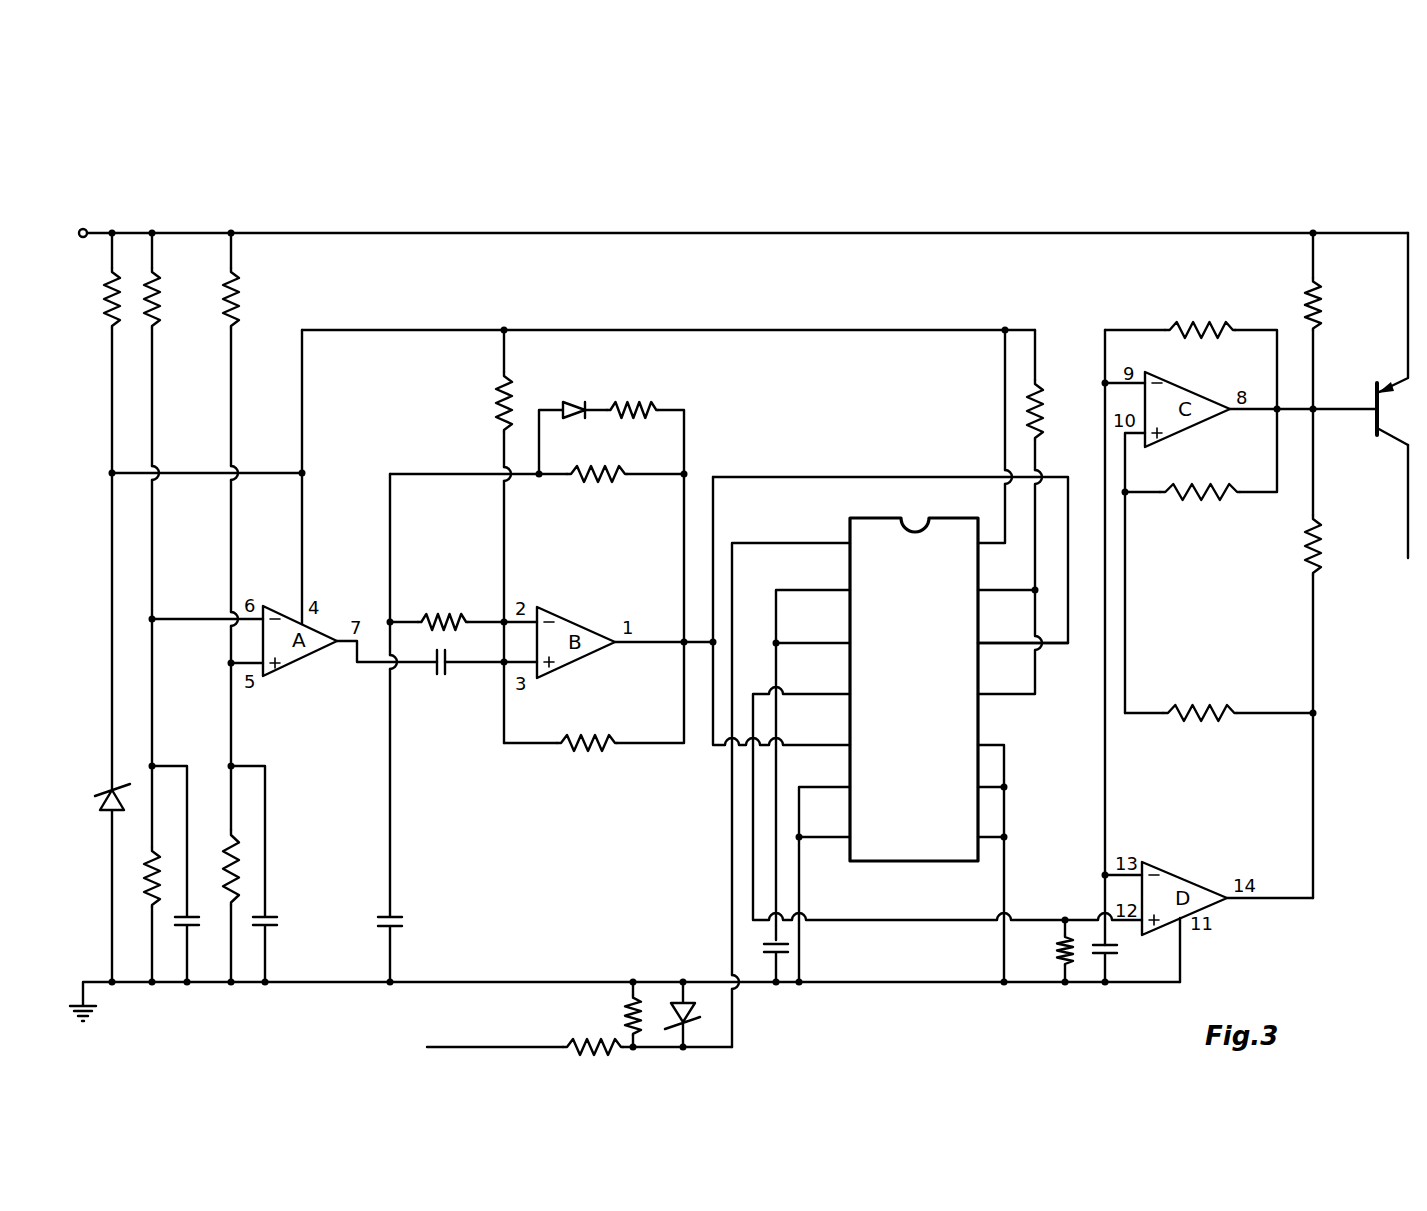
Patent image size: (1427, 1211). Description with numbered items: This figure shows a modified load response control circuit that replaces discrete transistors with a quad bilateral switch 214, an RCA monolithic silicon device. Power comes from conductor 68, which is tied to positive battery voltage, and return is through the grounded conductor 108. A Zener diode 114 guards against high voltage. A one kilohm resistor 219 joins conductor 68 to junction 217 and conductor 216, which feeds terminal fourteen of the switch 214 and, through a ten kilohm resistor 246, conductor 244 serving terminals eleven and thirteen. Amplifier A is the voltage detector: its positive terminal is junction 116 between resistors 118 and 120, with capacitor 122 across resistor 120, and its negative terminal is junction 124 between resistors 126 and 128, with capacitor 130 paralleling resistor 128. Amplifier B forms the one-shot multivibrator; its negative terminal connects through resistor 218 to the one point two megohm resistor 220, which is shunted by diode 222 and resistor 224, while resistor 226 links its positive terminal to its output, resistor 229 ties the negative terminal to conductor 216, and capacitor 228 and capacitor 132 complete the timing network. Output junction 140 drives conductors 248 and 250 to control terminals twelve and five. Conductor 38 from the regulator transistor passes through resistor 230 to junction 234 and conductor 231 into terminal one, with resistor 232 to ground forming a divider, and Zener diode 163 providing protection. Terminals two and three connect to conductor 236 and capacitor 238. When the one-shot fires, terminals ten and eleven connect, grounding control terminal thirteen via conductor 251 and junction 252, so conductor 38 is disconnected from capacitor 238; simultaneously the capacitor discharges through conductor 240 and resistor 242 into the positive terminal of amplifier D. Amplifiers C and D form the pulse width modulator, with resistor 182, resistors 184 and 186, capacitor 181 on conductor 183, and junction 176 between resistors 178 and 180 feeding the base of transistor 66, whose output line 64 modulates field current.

The conductor 68 is at (415, 232).
The 1K resistor 219 is at (105, 292).
The resistor 126 is at (157, 300).
The resistor 118 is at (238, 300).
The junction 217 is at (112, 473).
The junction 124 is at (152, 619).
The junction 116 is at (231, 663).
The Zener diode 114 is at (105, 795).
The resistor 128 is at (145, 870).
The resistor 120 is at (235, 855).
The capacitor 122 is at (270, 918).
The capacitor 130 is at (178, 930).
The conductor 216 is at (620, 330).
The 4.7 megohm resistor 229 is at (498, 405).
The diode 222 is at (570, 404).
The resistor 224 is at (618, 402).
The 1.2 megohm resistor 220 is at (600, 480).
The 100K resistor 218 is at (430, 612).
The capacitor 132 is at (443, 675).
The junction 140 is at (684, 640).
The resistor 226 is at (588, 755).
The conductor 250 is at (710, 742).
The conductor 236 is at (773, 783).
The conductor 231 is at (730, 858).
The conductor 248 is at (770, 475).
The 10K resistor 246 is at (1040, 400).
The conductor 244 is at (1038, 517).
The conductor 251 is at (1020, 590).
The junction 252 is at (1040, 597).
The quad bilateral switch 214 is at (878, 863).
The conductor 240 is at (890, 922).
The capacitor 238 is at (778, 958).
The 1.2 megohm resistor 242 is at (1060, 940).
The capacitor 181 is at (1110, 952).
The conductor 183 is at (1105, 750).
The 10K resistor 182 is at (1170, 710).
The resistor 186 is at (1210, 495).
The resistor 184 is at (1200, 328).
The resistor 178 is at (1318, 305).
The transistor 66 is at (1378, 400).
The junction 176 is at (1313, 415).
The output line 64 is at (1406, 520).
The resistor 180 is at (1320, 565).
The capacitor 228 is at (395, 915).
The conductor 108 is at (440, 982).
The 150K resistor 232 is at (625, 1010).
The Zener diode 163 is at (687, 1007).
The conductor 38 is at (460, 1047).
The 100K resistor 230 is at (595, 1048).
The junction 234 is at (631, 1050).